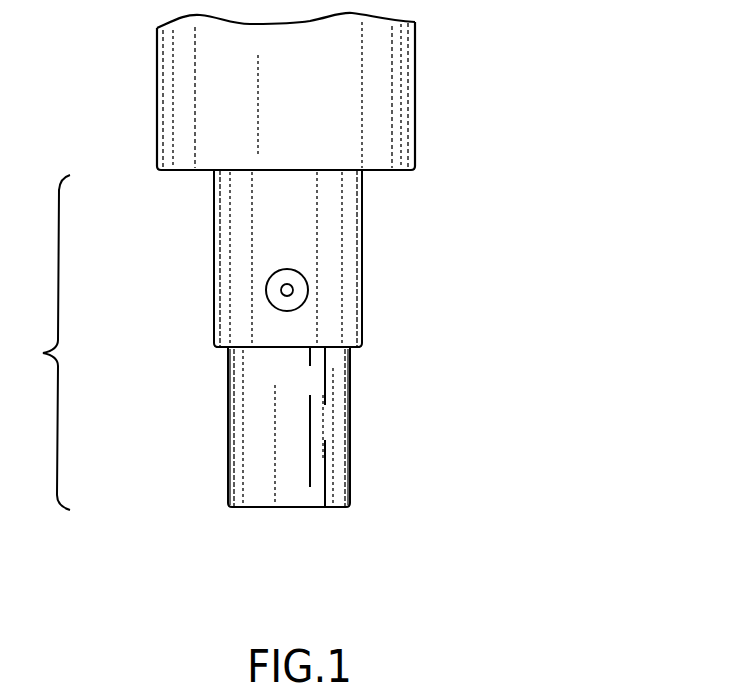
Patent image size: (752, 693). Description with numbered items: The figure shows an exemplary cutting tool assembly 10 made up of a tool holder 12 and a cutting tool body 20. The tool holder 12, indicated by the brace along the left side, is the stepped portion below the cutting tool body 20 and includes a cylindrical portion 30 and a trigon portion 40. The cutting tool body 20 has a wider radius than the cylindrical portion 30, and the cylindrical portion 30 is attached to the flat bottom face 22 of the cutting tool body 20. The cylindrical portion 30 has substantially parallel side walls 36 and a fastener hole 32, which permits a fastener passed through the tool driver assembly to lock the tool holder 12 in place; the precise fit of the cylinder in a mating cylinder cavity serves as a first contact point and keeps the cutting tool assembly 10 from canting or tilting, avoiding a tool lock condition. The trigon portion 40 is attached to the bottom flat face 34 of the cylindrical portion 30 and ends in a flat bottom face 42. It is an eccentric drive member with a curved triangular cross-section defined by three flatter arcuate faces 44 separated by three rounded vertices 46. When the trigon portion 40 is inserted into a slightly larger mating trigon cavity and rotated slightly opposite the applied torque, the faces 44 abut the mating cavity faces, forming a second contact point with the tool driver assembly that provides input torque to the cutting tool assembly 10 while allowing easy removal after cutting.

The cutting tool assembly 10 is at (592, 80).
The tool holder 12 is at (40, 342).
The cutting tool body 20 is at (400, 108).
The flat bottom face 22 is at (398, 175).
The cylindrical portion 30 is at (350, 258).
The fastener hole 32 is at (273, 293).
The bottom flat face 34 is at (222, 352).
The side walls 36 is at (214, 228).
The trigon portion 40 is at (340, 456).
The flat bottom face 42 is at (290, 508).
The arcuate faces 44 is at (340, 401).
The rounded vertices 46 is at (312, 470).